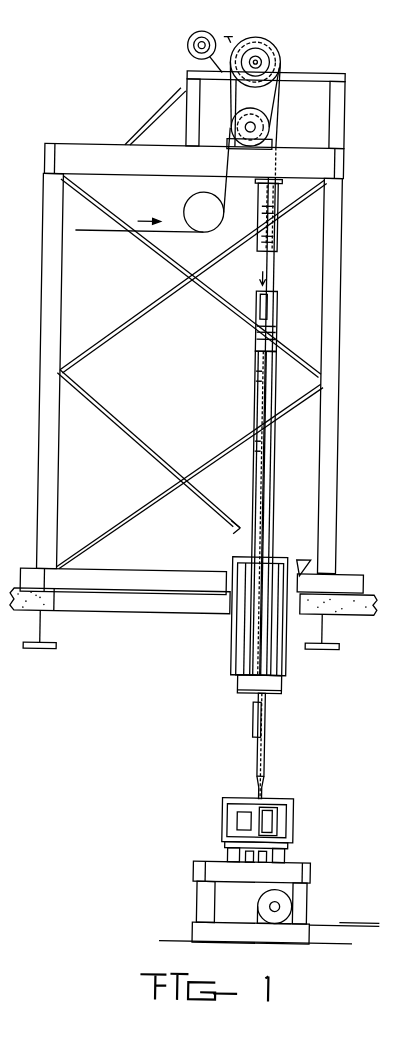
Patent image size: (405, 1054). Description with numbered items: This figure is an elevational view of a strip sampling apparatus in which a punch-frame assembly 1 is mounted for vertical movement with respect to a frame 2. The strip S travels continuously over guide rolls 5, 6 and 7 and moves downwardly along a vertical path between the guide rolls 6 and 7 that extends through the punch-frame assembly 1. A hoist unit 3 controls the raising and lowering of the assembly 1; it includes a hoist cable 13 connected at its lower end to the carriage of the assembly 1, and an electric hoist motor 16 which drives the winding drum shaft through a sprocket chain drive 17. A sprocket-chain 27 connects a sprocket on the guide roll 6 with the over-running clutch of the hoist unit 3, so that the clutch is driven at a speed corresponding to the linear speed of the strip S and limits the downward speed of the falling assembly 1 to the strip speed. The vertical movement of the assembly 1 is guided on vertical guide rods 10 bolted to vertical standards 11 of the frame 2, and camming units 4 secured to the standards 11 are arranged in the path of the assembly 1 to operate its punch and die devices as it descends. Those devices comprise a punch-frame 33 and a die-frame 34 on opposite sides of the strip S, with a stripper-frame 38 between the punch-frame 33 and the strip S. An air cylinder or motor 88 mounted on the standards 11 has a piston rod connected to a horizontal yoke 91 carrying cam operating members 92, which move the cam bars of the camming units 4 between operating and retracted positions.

The punch-frame assembly 1 is at (228, 836).
The frame 2 is at (341, 296).
The hoist unit 3 is at (278, 58).
The camming units 4 is at (232, 624).
The guide roll 5 is at (185, 200).
The guide roll 6 is at (228, 120).
The guide roll 7 is at (306, 905).
The vertical guide rods 10 is at (274, 309).
The vertical standards 11 is at (257, 360).
The hoist cable 13 is at (273, 268).
The electric hoist motor 16 is at (201, 31).
The sprocket chain drive 17 is at (221, 36).
The sprocket-chain 27 is at (230, 94).
The punch-frame 33 is at (286, 827).
The die-frame 34 is at (246, 815).
The stripper-frame 38 is at (275, 806).
The air cylinder or motor 88 is at (260, 706).
The yoke 91 is at (244, 694).
The cam operating members 92 is at (289, 678).
The strip S is at (101, 232).